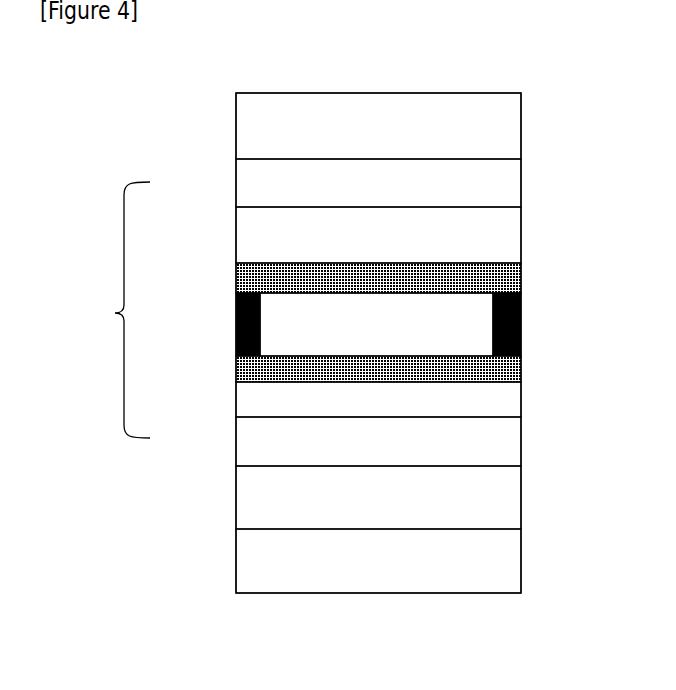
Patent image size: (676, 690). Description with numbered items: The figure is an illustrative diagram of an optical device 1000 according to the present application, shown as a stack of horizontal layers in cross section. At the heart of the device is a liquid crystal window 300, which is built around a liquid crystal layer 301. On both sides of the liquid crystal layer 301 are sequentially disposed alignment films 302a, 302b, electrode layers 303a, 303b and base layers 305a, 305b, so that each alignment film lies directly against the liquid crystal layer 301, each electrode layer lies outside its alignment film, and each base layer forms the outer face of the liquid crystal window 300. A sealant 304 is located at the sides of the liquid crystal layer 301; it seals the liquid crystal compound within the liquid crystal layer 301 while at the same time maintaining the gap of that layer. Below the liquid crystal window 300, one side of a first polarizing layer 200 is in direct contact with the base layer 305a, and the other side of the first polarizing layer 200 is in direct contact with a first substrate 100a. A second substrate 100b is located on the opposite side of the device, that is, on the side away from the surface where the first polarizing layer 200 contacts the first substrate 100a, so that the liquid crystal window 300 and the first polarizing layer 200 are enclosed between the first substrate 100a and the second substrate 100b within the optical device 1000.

The optical device 1000 is at (180, 66).
The second substrate 100b is at (236, 130).
The first substrate 100a is at (236, 562).
The first polarizing layer 200 is at (236, 498).
The liquid crystal window 300 is at (115, 313).
The liquid crystal layer 301 is at (480, 320).
The alignment film 302a is at (521, 362).
The alignment film 302b is at (521, 280).
The electrode layer 303a is at (521, 400).
The electrode layer 303b is at (521, 240).
The sealant 304 is at (235, 322).
The base layer 305a is at (521, 440).
The base layer 305b is at (521, 178).